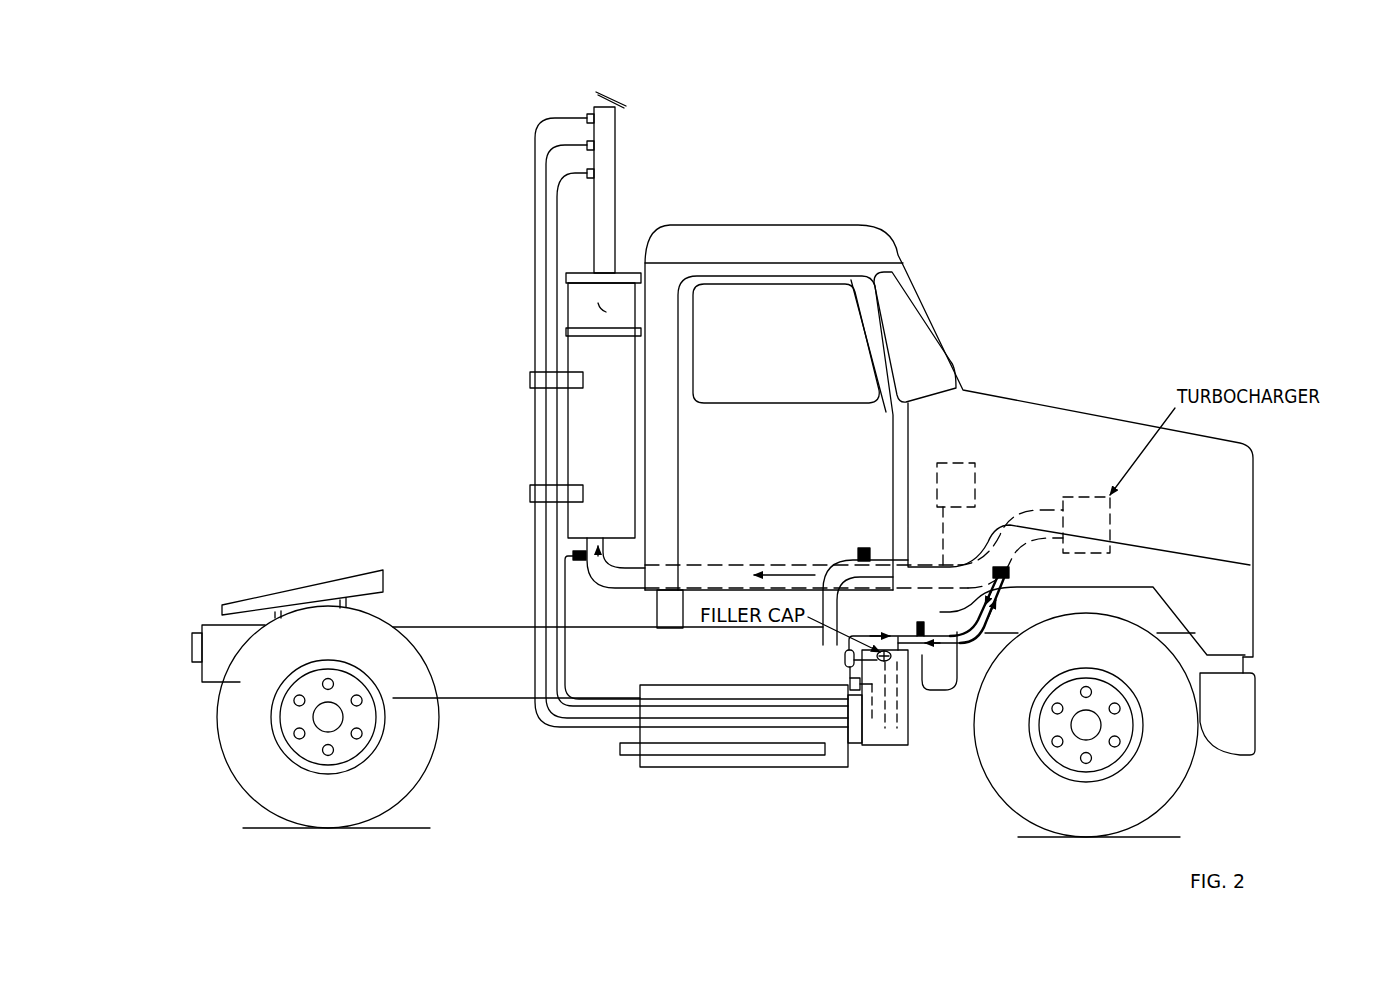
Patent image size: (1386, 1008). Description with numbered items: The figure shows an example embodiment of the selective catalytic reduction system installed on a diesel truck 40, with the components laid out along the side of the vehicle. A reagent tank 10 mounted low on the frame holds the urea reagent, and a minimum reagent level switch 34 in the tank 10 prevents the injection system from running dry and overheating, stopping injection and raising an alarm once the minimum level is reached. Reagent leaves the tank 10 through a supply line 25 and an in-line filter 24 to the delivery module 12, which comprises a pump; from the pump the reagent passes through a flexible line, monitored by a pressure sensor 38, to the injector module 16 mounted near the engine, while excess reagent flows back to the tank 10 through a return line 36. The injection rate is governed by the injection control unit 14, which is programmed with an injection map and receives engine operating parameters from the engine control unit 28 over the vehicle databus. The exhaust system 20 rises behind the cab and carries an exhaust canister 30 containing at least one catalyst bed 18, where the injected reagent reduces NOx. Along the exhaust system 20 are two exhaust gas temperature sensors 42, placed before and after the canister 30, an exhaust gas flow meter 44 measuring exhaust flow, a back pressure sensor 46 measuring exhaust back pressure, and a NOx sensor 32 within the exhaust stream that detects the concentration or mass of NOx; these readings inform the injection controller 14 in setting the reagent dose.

The reagent tank 10 is at (910, 737).
The delivery module 12 is at (845, 653).
The injection control unit 14 is at (853, 737).
The injector module 16 is at (1012, 572).
The catalyst bed 18 is at (595, 312).
The exhaust system 20 is at (520, 415).
The in-line filter 24 is at (848, 684).
The supply line 25 is at (872, 722).
The engine control unit 28 is at (970, 458).
The exhaust canister 30 is at (610, 451).
The NOx sensor 32 is at (554, 243).
The minimum reagent level switch 34 is at (885, 733).
The return line 36 is at (903, 707).
The pressure sensor 38 is at (925, 620).
The diesel truck 40 is at (902, 205).
The exhaust gas temperature sensor 42 is at (570, 550).
The exhaust gas flow meter 44 is at (543, 186).
The back pressure sensor 46 is at (860, 545).